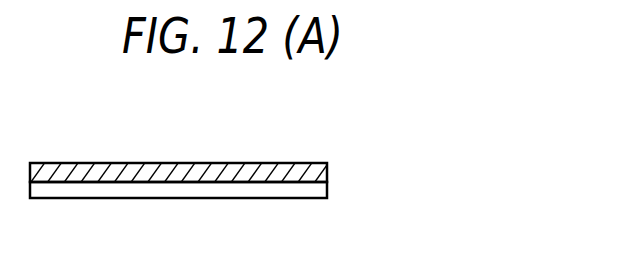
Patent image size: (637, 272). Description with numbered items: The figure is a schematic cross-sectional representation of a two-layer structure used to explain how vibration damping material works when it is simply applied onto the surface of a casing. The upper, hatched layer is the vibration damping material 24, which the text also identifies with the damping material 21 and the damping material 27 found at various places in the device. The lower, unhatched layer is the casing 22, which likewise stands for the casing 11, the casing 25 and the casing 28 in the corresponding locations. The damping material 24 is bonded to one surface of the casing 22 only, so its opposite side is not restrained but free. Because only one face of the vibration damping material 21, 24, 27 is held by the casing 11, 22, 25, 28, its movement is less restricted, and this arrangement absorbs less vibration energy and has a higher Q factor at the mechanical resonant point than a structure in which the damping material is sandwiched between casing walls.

The vibration damping material 24 is at (255, 147).
The casing 22 is at (275, 213).
The vibration damping material 21 is at (180, 171).
The vibration damping material 27 is at (298, 175).
The casing 11 is at (178, 190).
The casing 25 is at (178, 190).
The casing 28 is at (310, 198).